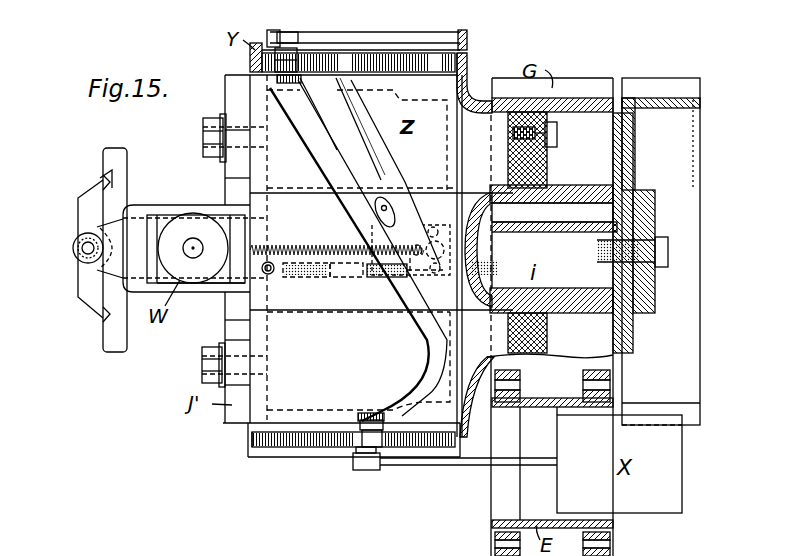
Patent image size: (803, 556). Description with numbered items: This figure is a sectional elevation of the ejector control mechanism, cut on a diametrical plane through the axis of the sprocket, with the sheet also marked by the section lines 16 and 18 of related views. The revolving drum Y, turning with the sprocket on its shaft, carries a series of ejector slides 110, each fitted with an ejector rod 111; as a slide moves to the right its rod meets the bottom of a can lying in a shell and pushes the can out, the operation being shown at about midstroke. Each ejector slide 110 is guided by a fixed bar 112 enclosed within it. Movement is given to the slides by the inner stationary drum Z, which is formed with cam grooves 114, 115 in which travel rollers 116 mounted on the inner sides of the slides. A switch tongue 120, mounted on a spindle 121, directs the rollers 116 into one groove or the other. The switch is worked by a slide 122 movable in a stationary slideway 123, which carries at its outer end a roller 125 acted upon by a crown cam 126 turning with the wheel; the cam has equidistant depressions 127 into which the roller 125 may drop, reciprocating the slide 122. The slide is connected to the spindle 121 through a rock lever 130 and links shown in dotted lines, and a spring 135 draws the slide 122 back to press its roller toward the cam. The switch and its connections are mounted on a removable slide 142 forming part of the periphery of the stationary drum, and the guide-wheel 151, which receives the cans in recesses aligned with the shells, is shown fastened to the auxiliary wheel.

The ejector slide 110 is at (292, 36).
The ejector rod 111 is at (468, 468).
The fixed bar 112 is at (422, 68).
The cam groove 114 is at (322, 160).
The cam groove 115 is at (385, 175).
The roller 116 is at (282, 87).
The switch tongue 120 is at (400, 232).
The spindle 121 is at (375, 210).
The slide 122 is at (110, 226).
The stationary slideway 123 is at (207, 294).
The roller 125 is at (85, 272).
The crown cam 126 is at (113, 337).
The depression 127 is at (105, 180).
The rock lever 130 is at (460, 243).
The spring 135 is at (373, 250).
The removable slide 142 is at (172, 208).
The guide-wheel 151 is at (690, 155).
The section line 16 is at (389, 80).
The section line 18 is at (72, 248).